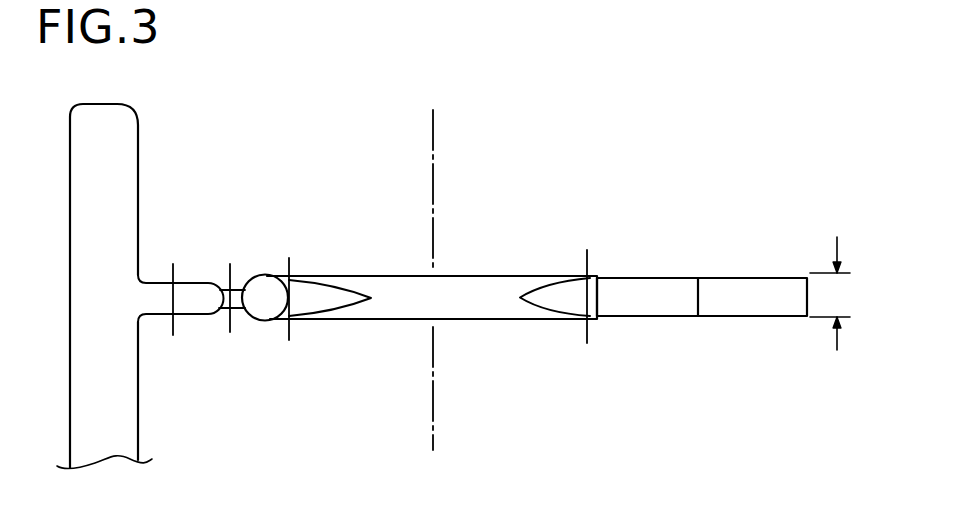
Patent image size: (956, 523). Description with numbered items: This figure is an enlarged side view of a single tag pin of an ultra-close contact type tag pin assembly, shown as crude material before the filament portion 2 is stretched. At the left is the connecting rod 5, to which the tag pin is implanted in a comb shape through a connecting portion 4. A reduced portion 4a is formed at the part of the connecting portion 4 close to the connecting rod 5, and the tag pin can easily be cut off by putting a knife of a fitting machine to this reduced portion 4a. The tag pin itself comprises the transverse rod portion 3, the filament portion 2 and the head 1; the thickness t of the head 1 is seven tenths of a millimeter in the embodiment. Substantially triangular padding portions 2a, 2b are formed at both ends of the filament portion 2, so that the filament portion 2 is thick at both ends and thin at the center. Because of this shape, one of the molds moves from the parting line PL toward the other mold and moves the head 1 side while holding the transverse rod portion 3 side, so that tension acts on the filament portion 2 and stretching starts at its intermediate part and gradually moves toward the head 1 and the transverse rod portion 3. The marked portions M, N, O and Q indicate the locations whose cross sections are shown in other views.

The head 1 is at (639, 277).
The filament portion 2 is at (497, 288).
The padding portion 2a is at (556, 288).
The padding portion 2b is at (337, 302).
The transverse rod portion 3 is at (270, 286).
The connecting portion 4 is at (188, 280).
The reduced portion 4a is at (240, 280).
The connecting rod 5 is at (127, 170).
The portion M is at (173, 326).
The portion N is at (230, 326).
The portion O is at (289, 326).
The portion Q is at (608, 322).
The parting line PL is at (435, 264).
The thickness t is at (830, 293).